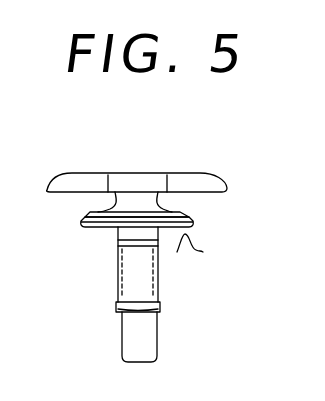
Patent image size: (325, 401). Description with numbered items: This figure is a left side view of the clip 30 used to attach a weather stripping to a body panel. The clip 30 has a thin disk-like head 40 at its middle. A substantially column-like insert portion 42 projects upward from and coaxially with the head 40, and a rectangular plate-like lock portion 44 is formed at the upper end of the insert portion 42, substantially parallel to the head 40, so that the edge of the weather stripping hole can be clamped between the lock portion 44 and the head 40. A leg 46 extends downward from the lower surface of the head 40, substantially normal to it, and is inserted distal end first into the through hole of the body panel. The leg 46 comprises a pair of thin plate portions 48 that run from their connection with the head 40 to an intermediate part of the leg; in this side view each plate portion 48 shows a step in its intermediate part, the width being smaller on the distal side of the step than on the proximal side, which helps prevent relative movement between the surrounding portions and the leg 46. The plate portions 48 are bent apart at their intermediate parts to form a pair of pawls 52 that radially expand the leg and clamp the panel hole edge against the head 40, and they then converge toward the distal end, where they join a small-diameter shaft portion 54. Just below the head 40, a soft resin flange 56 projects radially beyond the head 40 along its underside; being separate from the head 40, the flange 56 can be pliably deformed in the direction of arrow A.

The clip 30 is at (195, 155).
The lock portion 44 is at (85, 174).
The insert portion 42 is at (135, 197).
The head 40 is at (163, 205).
The flange 56 is at (192, 222).
The leg 46 is at (103, 303).
The plate portions 48 is at (140, 265).
The pawls 52 is at (113, 245).
The shaft portion 54 is at (147, 335).
The arrow A is at (198, 250).